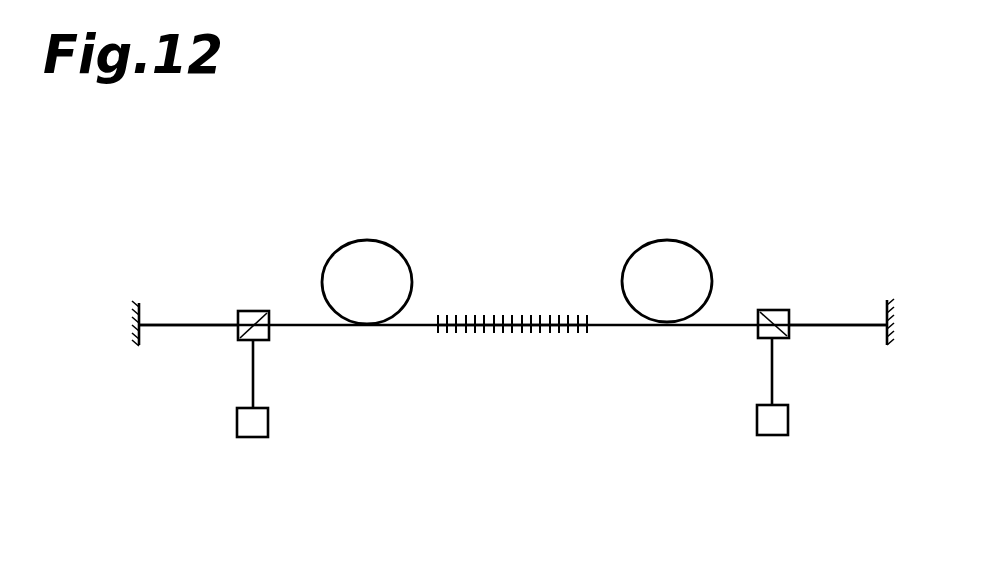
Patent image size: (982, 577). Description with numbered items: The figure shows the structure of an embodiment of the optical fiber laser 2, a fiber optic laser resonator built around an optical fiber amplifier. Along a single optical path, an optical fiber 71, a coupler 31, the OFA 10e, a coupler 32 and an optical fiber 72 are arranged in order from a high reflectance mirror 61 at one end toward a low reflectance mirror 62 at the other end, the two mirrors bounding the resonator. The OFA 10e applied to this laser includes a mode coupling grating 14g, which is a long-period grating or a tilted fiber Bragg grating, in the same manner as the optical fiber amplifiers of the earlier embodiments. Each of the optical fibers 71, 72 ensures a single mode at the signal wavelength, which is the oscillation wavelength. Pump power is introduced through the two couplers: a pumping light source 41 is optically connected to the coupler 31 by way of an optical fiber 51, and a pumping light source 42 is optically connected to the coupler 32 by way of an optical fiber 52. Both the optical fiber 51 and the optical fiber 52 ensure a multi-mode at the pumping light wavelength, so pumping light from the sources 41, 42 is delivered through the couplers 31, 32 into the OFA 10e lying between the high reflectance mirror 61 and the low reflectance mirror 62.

The optical fiber laser 2 is at (753, 183).
The OFA 10e is at (365, 240).
The mode coupling grating 14g is at (517, 317).
The coupler 31 is at (252, 310).
The coupler 32 is at (771, 310).
The pumping light source 41 is at (252, 438).
The pumping light source 42 is at (772, 437).
The optical fiber 51 is at (253, 378).
The optical fiber 52 is at (772, 380).
The high reflectance mirror 61 is at (135, 345).
The low reflectance mirror 62 is at (887, 347).
The optical fiber 71 is at (188, 324).
The optical fiber 72 is at (837, 323).